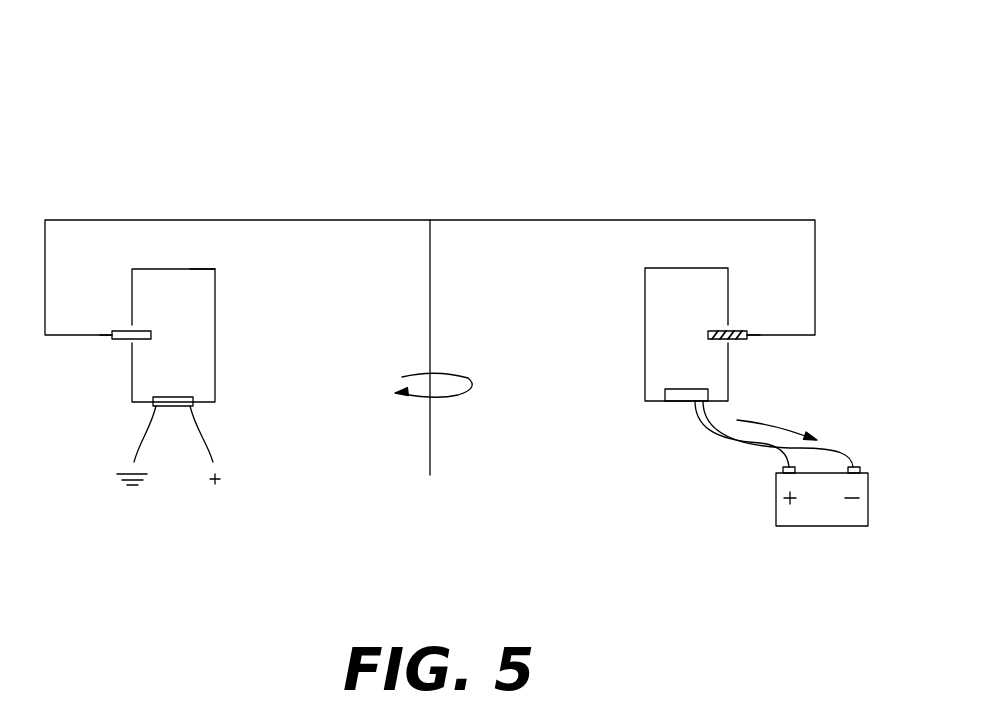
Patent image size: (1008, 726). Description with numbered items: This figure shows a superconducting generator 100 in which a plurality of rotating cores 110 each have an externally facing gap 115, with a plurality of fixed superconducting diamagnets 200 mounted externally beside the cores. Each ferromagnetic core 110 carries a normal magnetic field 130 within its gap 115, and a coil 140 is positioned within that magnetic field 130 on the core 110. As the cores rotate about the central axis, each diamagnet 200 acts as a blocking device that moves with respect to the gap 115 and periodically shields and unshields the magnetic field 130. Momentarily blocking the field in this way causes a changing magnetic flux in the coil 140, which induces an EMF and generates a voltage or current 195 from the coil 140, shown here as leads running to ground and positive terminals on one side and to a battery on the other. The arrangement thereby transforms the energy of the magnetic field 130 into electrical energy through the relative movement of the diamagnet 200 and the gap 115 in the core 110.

The superconducting generator 100 is at (740, 108).
The ferromagnetic core 110 is at (130, 375).
The gap 115 is at (122, 326).
The magnetic field 130 is at (190, 269).
The coil 140 is at (193, 410).
The voltage or current 195 is at (155, 450).
The superconducting diamagnet 200 is at (113, 338).